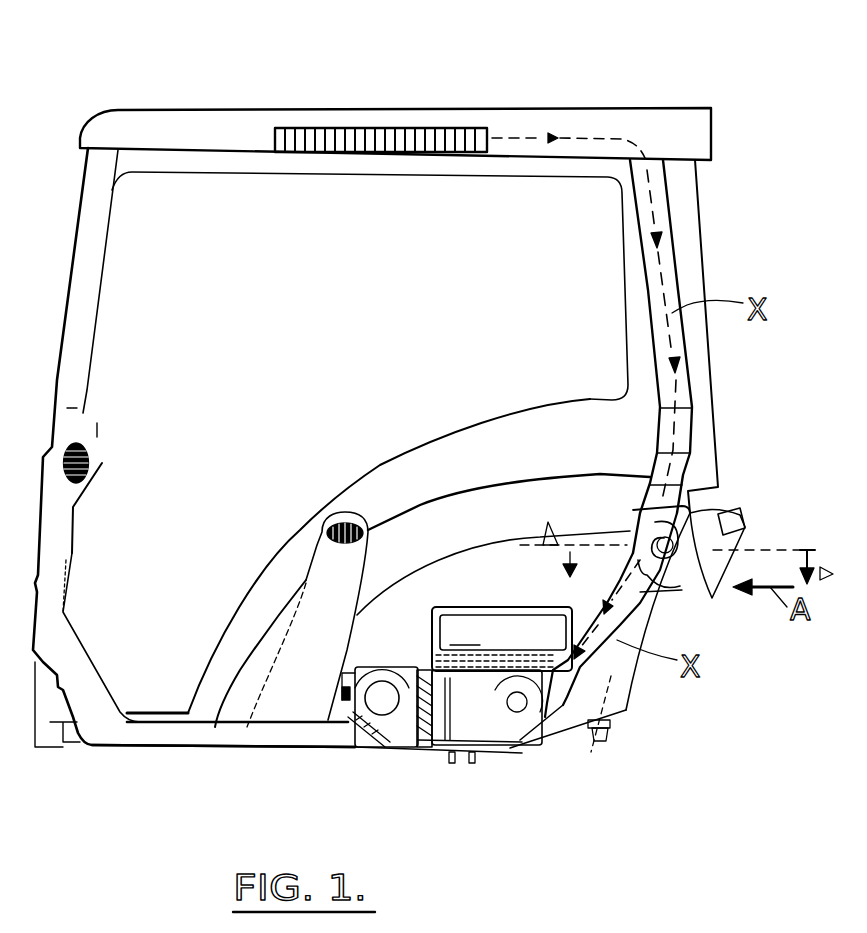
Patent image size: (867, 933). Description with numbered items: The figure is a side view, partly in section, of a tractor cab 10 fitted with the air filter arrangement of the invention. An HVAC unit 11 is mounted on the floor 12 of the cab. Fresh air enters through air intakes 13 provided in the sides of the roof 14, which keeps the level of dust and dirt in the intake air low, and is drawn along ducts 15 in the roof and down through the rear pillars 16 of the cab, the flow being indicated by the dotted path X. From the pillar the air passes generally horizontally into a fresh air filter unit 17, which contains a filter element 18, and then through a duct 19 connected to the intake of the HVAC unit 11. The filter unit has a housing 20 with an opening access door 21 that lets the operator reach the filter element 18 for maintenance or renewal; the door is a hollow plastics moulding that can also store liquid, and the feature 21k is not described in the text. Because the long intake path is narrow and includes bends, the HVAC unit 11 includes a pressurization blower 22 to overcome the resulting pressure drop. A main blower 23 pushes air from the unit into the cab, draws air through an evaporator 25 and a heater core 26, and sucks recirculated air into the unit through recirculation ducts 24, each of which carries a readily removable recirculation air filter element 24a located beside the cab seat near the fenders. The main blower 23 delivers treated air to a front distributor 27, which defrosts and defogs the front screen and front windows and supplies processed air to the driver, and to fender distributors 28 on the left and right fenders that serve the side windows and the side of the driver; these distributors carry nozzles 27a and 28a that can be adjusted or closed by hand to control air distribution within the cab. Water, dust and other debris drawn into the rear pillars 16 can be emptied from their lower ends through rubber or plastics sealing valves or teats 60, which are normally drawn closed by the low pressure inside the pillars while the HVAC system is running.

The tractor cab 10 is at (211, 210).
The HVAC unit 11 is at (440, 733).
The floor 12 is at (158, 730).
The air intakes 13 is at (328, 137).
The roof 14 is at (522, 110).
The ducts 15 is at (673, 141).
The rear pillars 16 is at (687, 373).
The fresh air filter unit 17 is at (655, 572).
The filter element 18 is at (630, 540).
The duct 19 is at (600, 610).
The housing 20 is at (643, 507).
The access door 21 is at (745, 533).
The lever tab 21k is at (733, 513).
The pressurization blower 22 is at (517, 705).
The main blower 23 is at (385, 720).
The recirculation ducts 24 is at (477, 607).
The recirculation air filter element 24a is at (473, 637).
The evaporator 25 is at (480, 720).
The heater core 26 is at (427, 680).
The front distributor 27 is at (57, 553).
The nozzles 27a is at (88, 468).
The fender distributors 28 is at (333, 595).
The nozzles 28a is at (337, 527).
The sealing valves or teats 60 is at (603, 733).